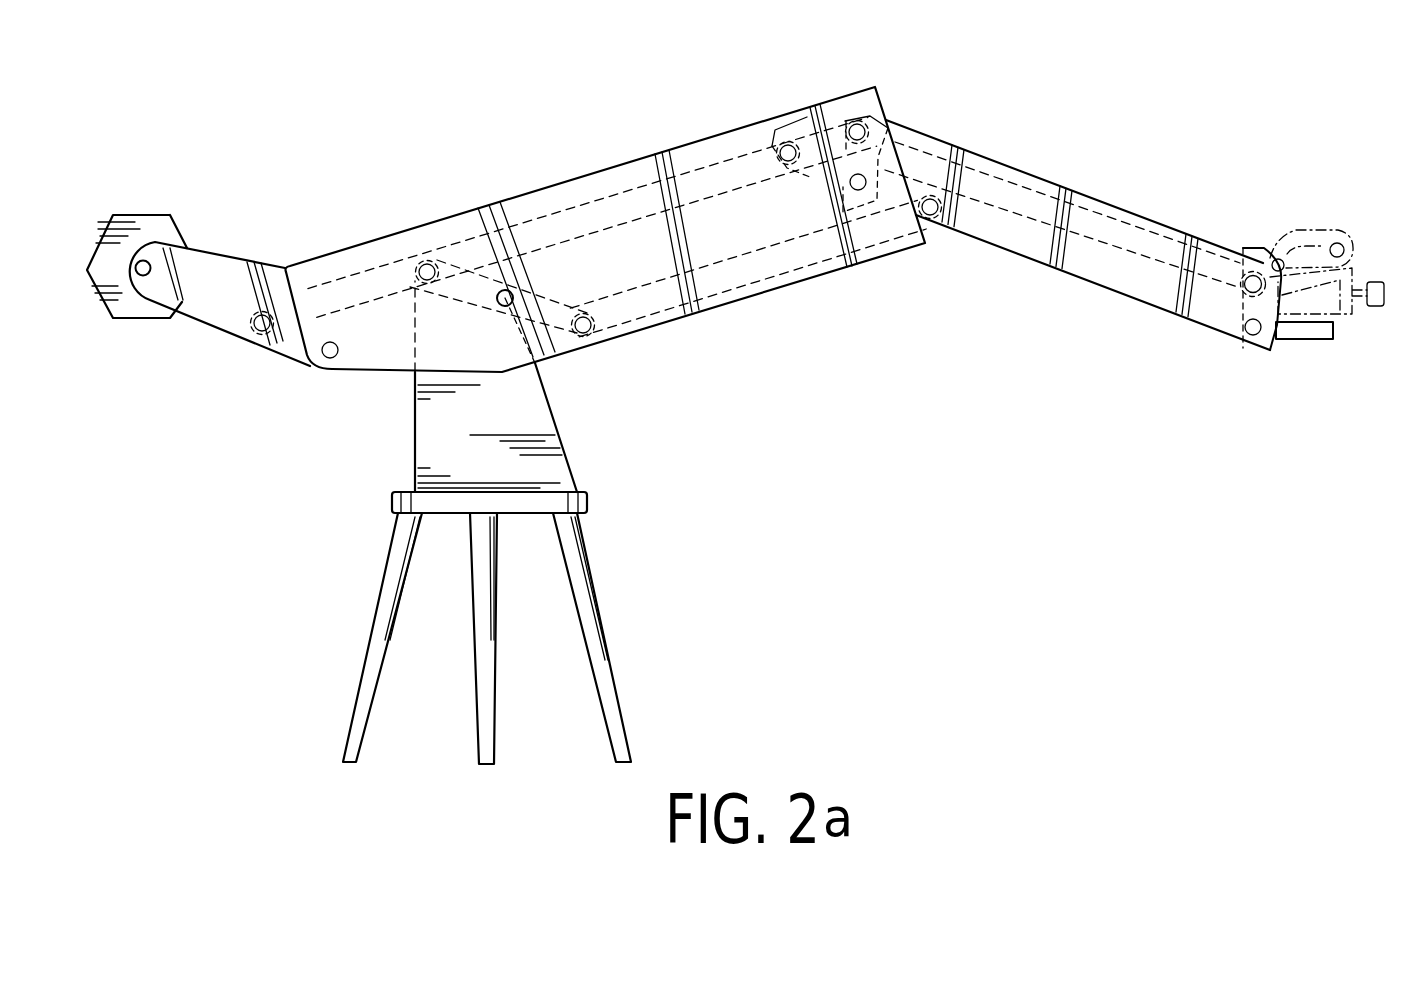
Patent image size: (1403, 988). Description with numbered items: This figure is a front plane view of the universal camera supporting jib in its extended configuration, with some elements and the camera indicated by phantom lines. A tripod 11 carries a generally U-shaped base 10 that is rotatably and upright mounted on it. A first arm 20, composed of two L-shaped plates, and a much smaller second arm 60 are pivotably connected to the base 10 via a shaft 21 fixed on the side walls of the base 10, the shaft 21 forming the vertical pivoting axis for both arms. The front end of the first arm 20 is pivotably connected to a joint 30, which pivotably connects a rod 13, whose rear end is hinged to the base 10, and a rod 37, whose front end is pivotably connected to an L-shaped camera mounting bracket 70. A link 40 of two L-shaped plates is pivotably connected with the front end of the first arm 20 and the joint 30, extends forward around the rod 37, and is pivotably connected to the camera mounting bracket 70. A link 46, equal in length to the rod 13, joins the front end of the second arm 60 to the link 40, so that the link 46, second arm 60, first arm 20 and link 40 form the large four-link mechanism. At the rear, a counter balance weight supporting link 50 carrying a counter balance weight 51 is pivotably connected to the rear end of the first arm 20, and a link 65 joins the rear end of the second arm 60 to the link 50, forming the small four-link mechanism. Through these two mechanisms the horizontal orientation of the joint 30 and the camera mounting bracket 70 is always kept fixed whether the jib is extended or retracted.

The base 10 is at (553, 429).
The tripod 11 is at (587, 498).
The rod 13 is at (668, 183).
The first arm 20 is at (523, 203).
The shaft 21 is at (513, 290).
The joint 30 is at (823, 110).
The rod 37 is at (1104, 216).
The link 40 is at (1055, 272).
The link 46 is at (782, 263).
The counter balance weight supporting link 50 is at (222, 266).
The counter balance weight 51 is at (147, 258).
The second arm 60 is at (462, 296).
The link 65 is at (350, 283).
The camera mounting bracket 70 is at (1333, 331).